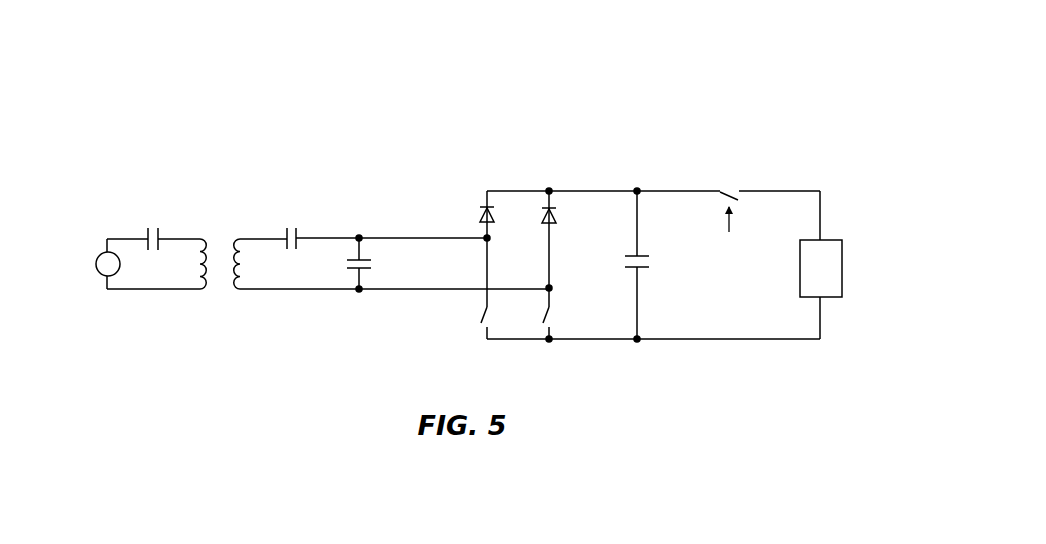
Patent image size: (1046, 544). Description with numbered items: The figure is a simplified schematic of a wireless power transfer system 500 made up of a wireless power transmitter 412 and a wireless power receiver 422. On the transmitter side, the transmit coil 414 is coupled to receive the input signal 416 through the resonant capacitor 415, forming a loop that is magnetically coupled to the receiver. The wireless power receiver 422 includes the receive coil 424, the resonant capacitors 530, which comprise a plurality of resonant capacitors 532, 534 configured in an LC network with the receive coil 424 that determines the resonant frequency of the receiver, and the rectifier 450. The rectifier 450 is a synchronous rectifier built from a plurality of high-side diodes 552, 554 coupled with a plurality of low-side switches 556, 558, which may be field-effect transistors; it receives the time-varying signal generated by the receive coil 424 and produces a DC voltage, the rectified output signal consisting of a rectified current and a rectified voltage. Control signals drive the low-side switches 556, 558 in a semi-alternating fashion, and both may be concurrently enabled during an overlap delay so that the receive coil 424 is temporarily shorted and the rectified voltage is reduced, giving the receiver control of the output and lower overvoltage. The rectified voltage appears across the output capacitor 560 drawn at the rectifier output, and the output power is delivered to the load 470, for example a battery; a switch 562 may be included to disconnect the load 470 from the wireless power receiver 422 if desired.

The wireless power transfer system 500 is at (613, 62).
The wireless power transmitter 412 is at (130, 185).
The input signal 416 is at (122, 237).
The resonant capacitor 415 is at (160, 242).
The transmit coil 414 is at (203, 290).
The receive coil 424 is at (233, 288).
The wireless power receiver 422 is at (423, 147).
The resonant capacitors 530 is at (320, 187).
The resonant capacitor 532 is at (300, 230).
The resonant capacitor 534 is at (370, 270).
The rectifier 450 is at (504, 175).
The high-side diode 552 is at (480, 217).
The high-side diode 554 is at (557, 217).
The low-side switch 556 is at (480, 320).
The low-side switch 558 is at (540, 320).
The output capacitor 560 is at (643, 270).
The switch 562 is at (725, 198).
The load 470 is at (832, 238).